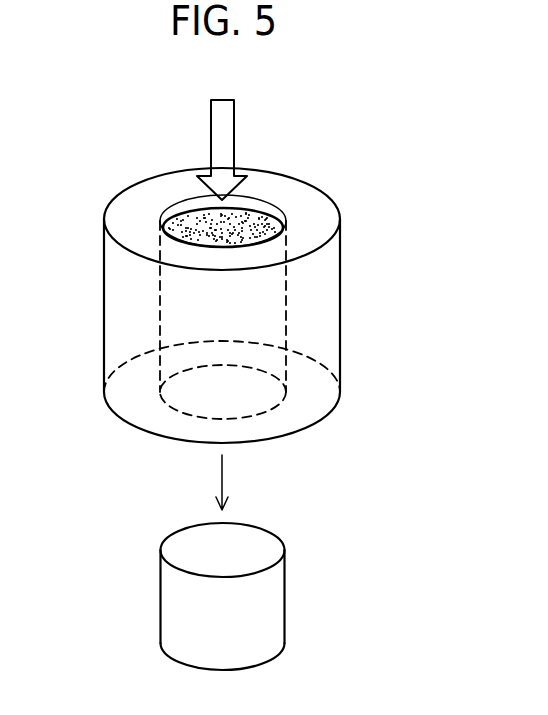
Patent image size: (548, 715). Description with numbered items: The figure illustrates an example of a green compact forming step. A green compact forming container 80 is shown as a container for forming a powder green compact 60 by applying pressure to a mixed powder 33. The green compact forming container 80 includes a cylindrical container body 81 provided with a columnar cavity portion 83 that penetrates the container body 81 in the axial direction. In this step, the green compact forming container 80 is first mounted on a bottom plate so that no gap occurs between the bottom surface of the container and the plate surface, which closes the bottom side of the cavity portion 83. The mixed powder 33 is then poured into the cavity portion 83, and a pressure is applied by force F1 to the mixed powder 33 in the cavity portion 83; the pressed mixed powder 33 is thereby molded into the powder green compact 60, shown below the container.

The force F1 is at (234, 118).
The green compact forming container 80 is at (246, 277).
The cylindrical container body 81 is at (104, 293).
The cavity portion 83 is at (176, 206).
The mixed powder 33 is at (254, 226).
The powder green compact 60 is at (285, 593).